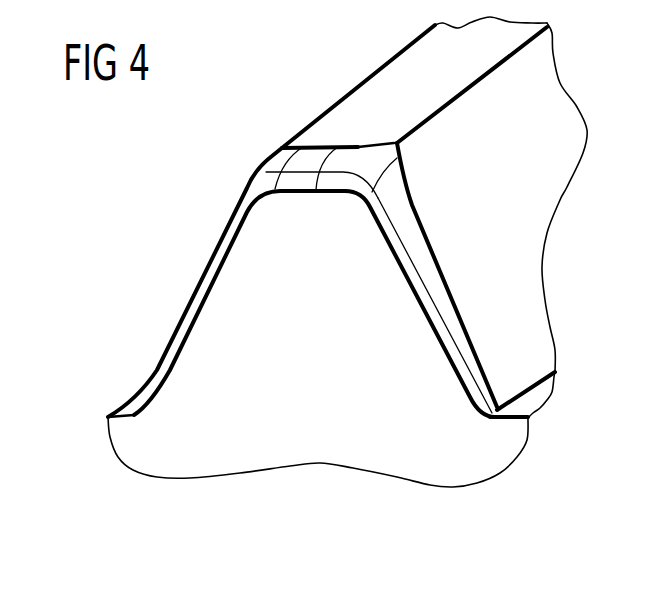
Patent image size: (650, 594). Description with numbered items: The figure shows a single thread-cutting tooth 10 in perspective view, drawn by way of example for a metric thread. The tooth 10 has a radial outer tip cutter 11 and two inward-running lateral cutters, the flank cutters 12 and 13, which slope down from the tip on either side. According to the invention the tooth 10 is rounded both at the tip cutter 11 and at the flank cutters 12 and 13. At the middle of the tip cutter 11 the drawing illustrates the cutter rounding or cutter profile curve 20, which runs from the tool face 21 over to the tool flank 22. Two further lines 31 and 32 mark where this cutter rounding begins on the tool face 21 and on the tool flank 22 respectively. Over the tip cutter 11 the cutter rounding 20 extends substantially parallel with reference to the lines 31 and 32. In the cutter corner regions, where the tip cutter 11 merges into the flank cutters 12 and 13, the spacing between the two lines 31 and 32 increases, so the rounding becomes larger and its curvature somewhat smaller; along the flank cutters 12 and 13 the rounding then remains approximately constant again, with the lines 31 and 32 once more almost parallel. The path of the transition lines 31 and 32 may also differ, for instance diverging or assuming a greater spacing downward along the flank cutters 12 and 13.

The thread-cutting tooth 10 is at (312, 388).
The tip cutter 11 is at (308, 172).
The flank cutter 12 is at (410, 262).
The flank cutter 13 is at (200, 285).
The cutter rounding 20 is at (340, 172).
The tool face 21 is at (295, 196).
The tool flank 22 is at (352, 145).
The line marking start of cutter rounding on tool face 31 is at (438, 353).
The line marking start of cutter rounding on tool flank 32 is at (460, 323).